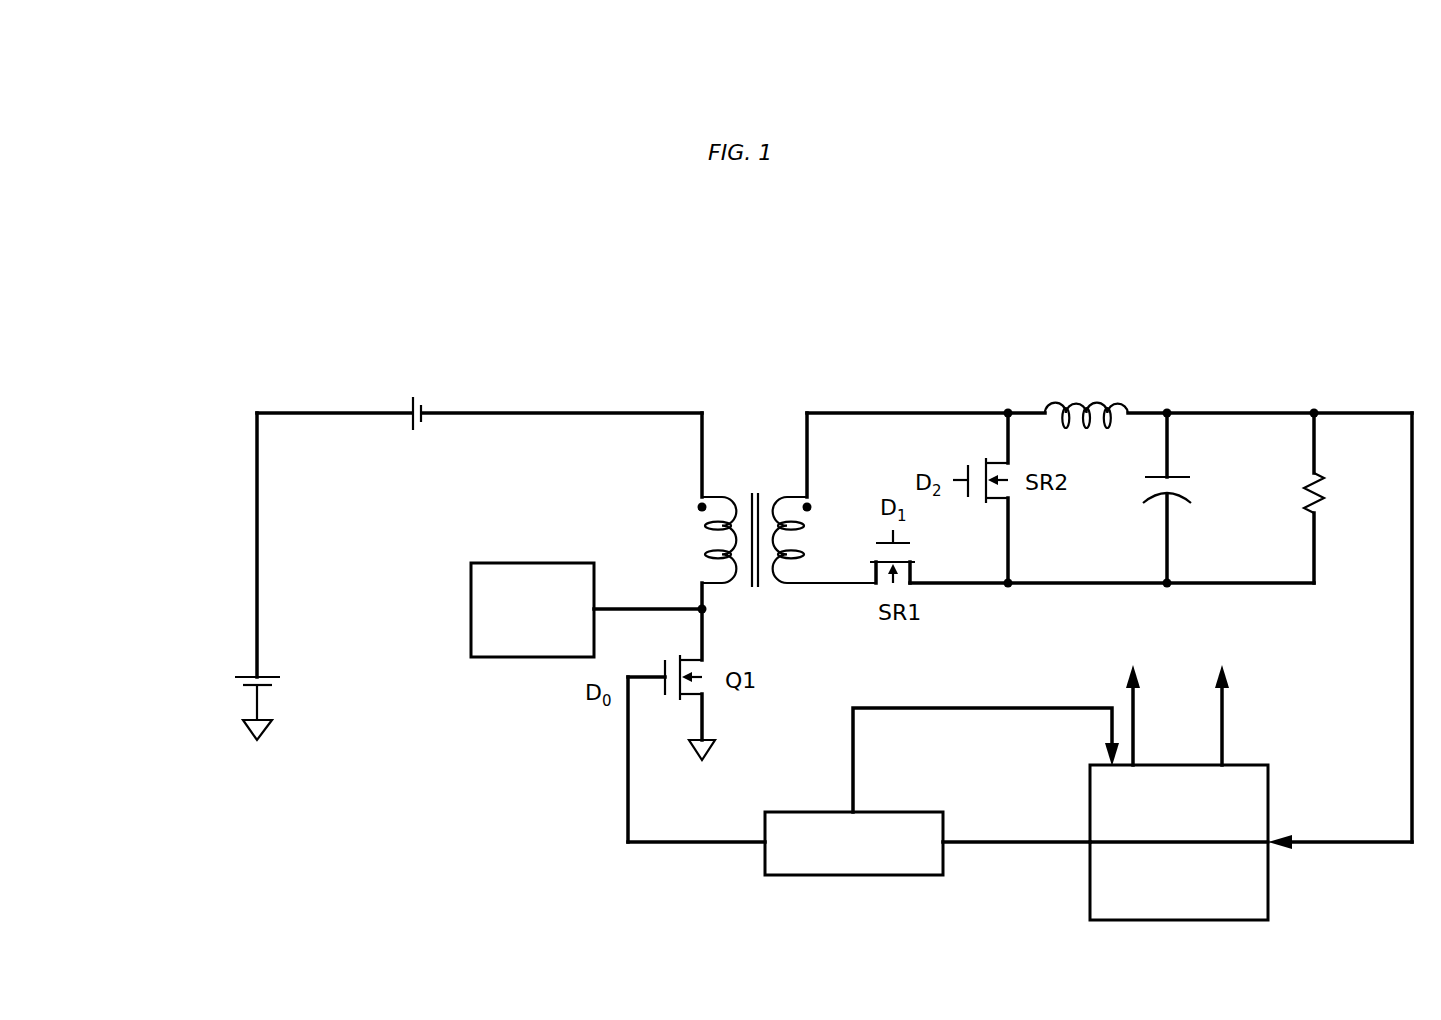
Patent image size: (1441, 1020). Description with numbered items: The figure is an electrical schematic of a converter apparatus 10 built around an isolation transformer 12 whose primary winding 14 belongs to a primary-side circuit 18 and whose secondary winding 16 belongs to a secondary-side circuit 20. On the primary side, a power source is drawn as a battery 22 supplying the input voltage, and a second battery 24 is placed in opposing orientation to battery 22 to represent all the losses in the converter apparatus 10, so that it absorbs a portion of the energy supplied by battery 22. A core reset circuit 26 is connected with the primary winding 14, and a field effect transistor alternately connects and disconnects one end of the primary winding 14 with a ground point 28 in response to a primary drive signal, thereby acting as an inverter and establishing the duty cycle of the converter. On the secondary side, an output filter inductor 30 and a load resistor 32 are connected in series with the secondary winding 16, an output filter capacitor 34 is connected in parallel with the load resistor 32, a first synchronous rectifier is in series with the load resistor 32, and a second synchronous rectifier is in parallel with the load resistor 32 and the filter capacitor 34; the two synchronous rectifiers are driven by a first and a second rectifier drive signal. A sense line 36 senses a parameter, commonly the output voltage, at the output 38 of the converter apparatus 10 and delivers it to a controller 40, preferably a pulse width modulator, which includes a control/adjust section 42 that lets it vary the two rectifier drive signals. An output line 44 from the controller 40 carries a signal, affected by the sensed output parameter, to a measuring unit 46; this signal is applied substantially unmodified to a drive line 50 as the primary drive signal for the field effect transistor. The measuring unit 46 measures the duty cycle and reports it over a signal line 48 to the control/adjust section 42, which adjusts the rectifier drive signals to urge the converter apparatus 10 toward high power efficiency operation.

The converter apparatus 10 is at (963, 346).
The isolation transformer 12 is at (755, 450).
The primary winding 14 is at (708, 540).
The secondary winding 16 is at (802, 540).
The primary-side circuit 18 is at (628, 328).
The secondary-side circuit 20 is at (1041, 316).
The battery 22 is at (248, 688).
The second battery 24 is at (410, 428).
The core reset circuit 26 is at (470, 600).
The ground point 28 is at (708, 747).
The output filter inductor 30 is at (1112, 395).
The load resistor 32 is at (1306, 498).
The output filter capacitor 34 is at (1178, 477).
The sense line 36 is at (1410, 700).
The output 38 is at (1333, 358).
The controller 40 is at (1270, 878).
The control/adjust section 42 is at (1270, 803).
The output line 44 is at (1000, 858).
The measuring unit 46 is at (945, 830).
The signal line 48 is at (983, 705).
The drive line 50 is at (626, 765).